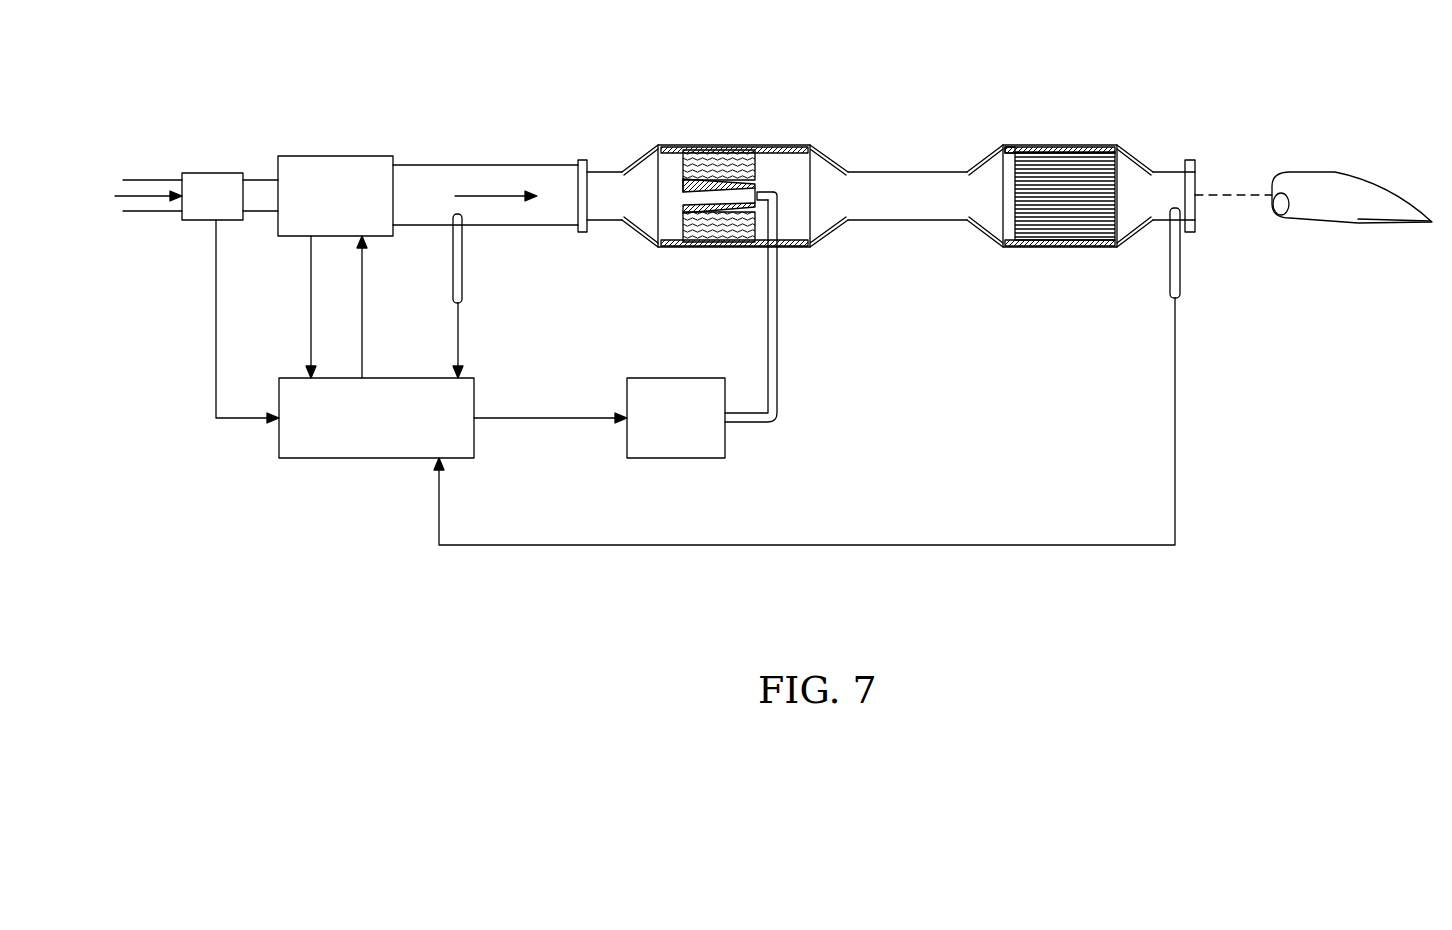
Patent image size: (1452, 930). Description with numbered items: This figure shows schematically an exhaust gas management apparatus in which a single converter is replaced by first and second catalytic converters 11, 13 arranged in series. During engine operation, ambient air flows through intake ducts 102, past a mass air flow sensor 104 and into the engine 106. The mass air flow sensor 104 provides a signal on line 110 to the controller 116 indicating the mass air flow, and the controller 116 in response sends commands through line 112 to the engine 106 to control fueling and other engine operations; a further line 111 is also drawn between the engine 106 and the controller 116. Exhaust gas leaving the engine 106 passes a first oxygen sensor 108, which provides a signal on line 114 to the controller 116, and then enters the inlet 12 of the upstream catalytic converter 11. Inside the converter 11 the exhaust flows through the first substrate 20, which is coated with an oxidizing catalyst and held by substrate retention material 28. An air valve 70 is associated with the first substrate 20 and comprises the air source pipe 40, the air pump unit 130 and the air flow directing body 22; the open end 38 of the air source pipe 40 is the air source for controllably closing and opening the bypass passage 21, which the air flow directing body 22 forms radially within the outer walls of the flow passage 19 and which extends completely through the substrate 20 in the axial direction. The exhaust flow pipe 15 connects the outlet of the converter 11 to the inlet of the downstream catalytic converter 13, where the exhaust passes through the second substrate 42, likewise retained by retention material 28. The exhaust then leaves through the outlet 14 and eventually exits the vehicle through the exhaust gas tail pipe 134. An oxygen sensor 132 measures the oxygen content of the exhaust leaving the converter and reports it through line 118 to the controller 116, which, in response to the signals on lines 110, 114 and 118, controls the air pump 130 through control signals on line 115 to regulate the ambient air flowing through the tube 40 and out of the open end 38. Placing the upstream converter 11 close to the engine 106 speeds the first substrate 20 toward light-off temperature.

The intake ducts 102 is at (143, 180).
The mass air flow sensor 104 is at (226, 173).
The engine 106 is at (345, 156).
The first oxygen sensor 108 is at (460, 243).
The line 110 is at (216, 312).
The engine signal line 111 is at (311, 270).
The line 112 is at (362, 312).
The line 114 is at (458, 325).
The line 115 is at (575, 418).
The controller 116 is at (343, 458).
The line 118 is at (795, 545).
The air pump unit 130 is at (688, 458).
The oxygen sensor 132 is at (1177, 240).
The exhaust gas tail pipe 134 is at (1310, 210).
The inlet 12 is at (603, 172).
The first catalytic converter 11 is at (718, 140).
The flow passage 19 is at (702, 180).
The air flow directing body 22 is at (681, 186).
The first substrate 20 is at (714, 224).
The bypass passage 21 is at (745, 190).
The air valve 70 is at (776, 175).
The open end 38 is at (779, 194).
The air source pipe 40 is at (777, 230).
The exhaust flow pipe 15 is at (912, 172).
The second catalytic converter 13 is at (1058, 258).
The substrate retention material 28 is at (1020, 146).
The second substrate 42 is at (1049, 172).
The outlet 14 is at (1175, 183).